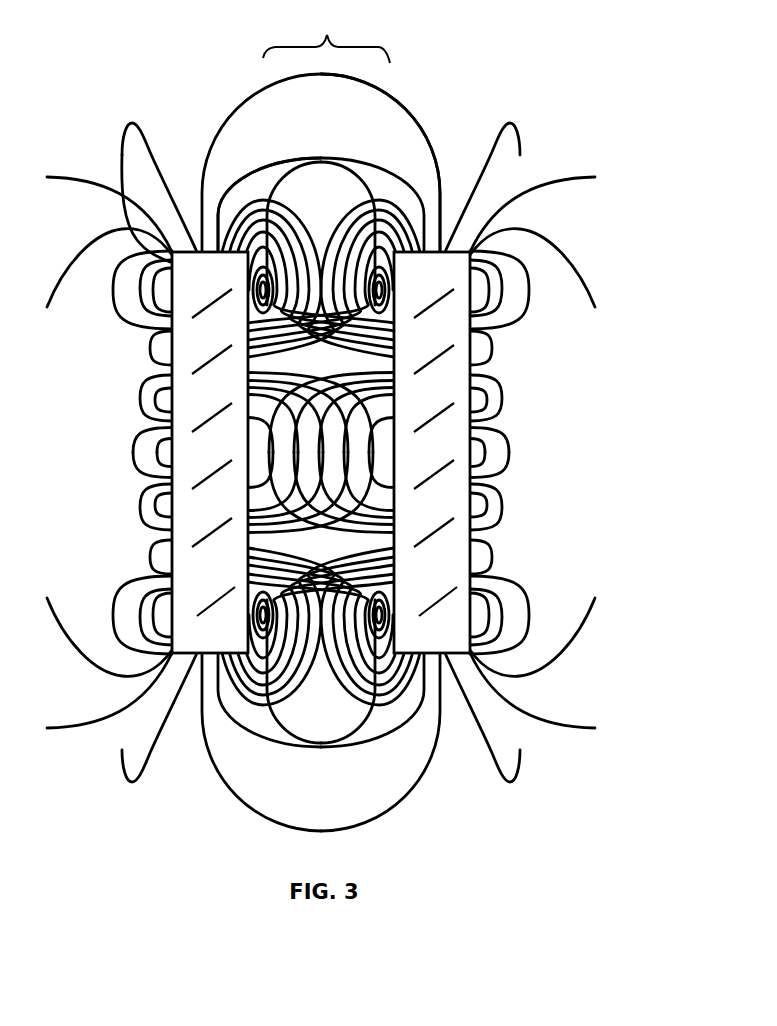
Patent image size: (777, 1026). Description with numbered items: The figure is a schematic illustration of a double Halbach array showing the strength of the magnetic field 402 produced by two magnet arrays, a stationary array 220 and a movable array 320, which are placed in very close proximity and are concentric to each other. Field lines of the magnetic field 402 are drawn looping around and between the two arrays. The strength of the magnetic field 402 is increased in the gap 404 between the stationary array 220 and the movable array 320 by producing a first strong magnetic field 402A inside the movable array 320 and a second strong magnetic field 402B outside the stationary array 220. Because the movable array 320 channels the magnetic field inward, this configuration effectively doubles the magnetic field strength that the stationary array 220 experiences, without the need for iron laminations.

The stationary array 220 is at (168, 364).
The movable array 320 is at (471, 367).
The magnetic field 402 is at (281, 137).
The first strong magnetic field 402A is at (445, 195).
The second strong magnetic field 402B is at (226, 212).
The gap 404 is at (326, 37).